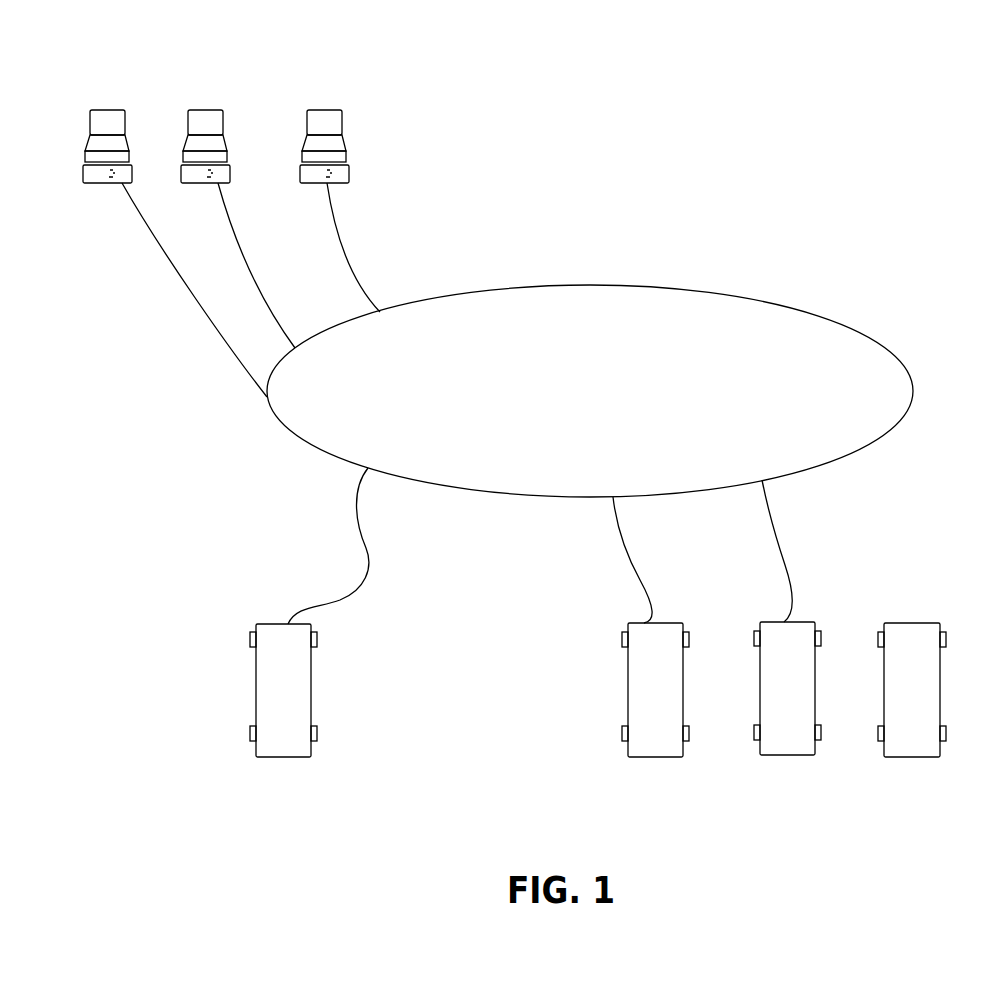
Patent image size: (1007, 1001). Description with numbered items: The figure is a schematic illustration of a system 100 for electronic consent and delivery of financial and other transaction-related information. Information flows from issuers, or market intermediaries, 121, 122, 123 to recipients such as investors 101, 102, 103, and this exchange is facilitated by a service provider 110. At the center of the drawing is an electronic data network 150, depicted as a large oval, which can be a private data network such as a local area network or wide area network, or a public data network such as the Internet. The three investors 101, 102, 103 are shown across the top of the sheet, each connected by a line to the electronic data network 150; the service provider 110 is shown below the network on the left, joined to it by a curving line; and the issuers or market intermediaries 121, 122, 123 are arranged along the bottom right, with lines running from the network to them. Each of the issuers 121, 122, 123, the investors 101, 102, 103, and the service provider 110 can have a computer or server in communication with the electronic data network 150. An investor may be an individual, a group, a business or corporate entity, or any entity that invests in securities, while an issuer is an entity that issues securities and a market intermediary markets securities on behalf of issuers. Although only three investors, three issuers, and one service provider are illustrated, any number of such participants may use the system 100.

The system 100 is at (872, 503).
The investor 101 is at (112, 110).
The investor 102 is at (215, 108).
The investor 103 is at (329, 108).
The service provider 110 is at (287, 738).
The issuer or market intermediary 121 is at (658, 738).
The issuer or market intermediary 122 is at (783, 738).
The issuer or market intermediary 123 is at (908, 740).
The electronic data network 150 is at (882, 398).